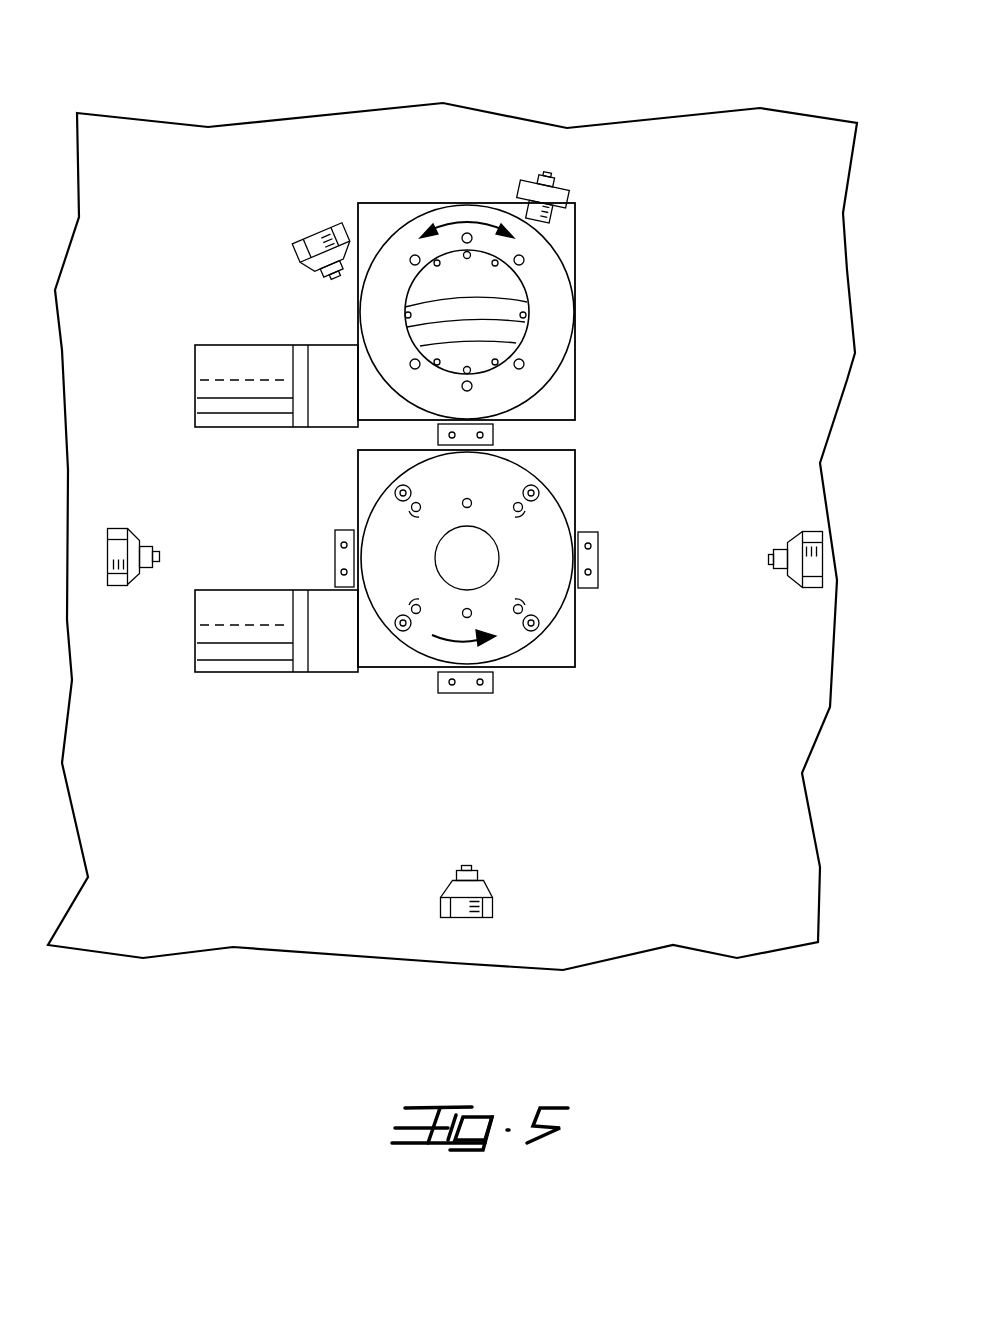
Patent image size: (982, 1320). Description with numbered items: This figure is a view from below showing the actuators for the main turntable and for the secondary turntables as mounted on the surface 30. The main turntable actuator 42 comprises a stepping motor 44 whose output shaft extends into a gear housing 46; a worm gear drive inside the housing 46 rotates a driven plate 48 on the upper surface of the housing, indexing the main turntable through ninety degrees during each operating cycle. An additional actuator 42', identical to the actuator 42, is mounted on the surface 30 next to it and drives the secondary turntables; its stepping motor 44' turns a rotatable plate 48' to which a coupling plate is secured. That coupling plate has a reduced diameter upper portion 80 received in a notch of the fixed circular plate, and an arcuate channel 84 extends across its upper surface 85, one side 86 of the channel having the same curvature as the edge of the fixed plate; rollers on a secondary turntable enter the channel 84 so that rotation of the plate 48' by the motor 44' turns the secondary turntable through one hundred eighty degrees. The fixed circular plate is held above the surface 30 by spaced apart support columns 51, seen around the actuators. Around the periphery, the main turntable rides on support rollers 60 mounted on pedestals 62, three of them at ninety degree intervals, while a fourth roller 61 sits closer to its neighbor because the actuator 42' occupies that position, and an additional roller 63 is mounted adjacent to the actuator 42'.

The surface 30 is at (427, 152).
The main turntable actuator 42 is at (513, 565).
The additional actuator 42' is at (471, 311).
The stepping motor 44 is at (276, 676).
The stepping motor 44' is at (270, 350).
The gear housing 46 is at (471, 441).
The driven plate 48 is at (500, 558).
The rotatable plate 48' is at (423, 312).
The support columns 51 is at (495, 436).
The support rollers 60 is at (470, 912).
The fourth roller 61 is at (322, 232).
The pedestals 62 is at (465, 562).
The additional roller 63 is at (565, 187).
The reduced diameter upper portion 80 is at (515, 312).
The arcuate channel 84 is at (430, 312).
The upper surface 85 is at (505, 340).
The side 86 is at (497, 326).